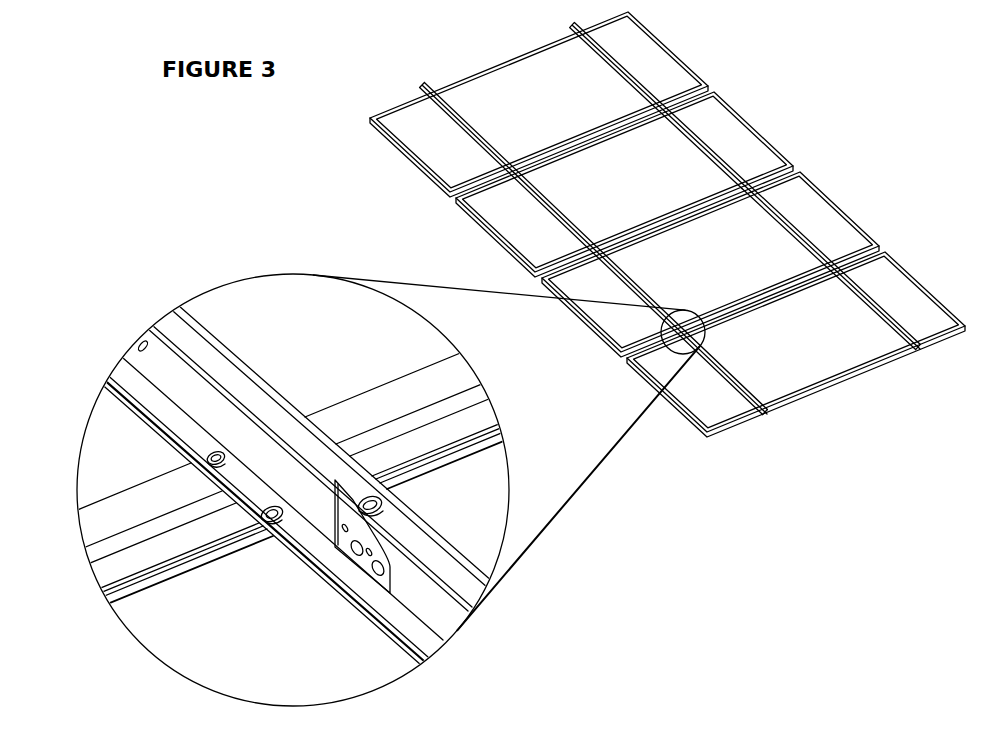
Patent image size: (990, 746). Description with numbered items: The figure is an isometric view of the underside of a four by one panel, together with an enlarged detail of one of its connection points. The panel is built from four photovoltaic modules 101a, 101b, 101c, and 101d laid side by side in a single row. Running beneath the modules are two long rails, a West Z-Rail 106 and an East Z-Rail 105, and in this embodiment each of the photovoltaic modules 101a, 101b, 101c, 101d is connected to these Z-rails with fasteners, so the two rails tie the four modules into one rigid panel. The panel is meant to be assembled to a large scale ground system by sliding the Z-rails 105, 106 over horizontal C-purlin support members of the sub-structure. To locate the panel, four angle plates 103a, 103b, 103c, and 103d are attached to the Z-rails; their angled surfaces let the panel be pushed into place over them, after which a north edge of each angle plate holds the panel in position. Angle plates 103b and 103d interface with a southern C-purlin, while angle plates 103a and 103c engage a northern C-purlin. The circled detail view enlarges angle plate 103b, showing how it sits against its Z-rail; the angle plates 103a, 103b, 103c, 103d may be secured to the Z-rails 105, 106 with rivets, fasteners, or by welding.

The photovoltaic module 101a is at (667, 38).
The photovoltaic module 101b is at (755, 118).
The photovoltaic module 101c is at (832, 194).
The photovoltaic module 101d is at (837, 388).
The angle plate 103a is at (518, 177).
The angle plate 103b is at (340, 553).
The angle plate 103c is at (672, 113).
The angle plate 103d is at (843, 272).
The East Z-Rail 105 is at (767, 410).
The West Z-Rail 106 is at (920, 347).